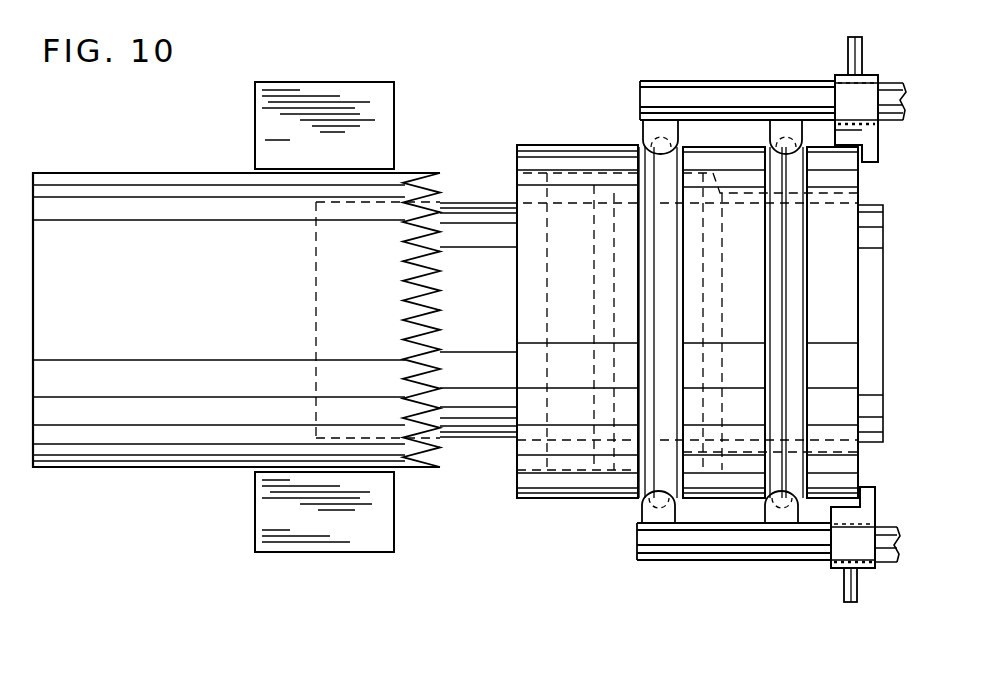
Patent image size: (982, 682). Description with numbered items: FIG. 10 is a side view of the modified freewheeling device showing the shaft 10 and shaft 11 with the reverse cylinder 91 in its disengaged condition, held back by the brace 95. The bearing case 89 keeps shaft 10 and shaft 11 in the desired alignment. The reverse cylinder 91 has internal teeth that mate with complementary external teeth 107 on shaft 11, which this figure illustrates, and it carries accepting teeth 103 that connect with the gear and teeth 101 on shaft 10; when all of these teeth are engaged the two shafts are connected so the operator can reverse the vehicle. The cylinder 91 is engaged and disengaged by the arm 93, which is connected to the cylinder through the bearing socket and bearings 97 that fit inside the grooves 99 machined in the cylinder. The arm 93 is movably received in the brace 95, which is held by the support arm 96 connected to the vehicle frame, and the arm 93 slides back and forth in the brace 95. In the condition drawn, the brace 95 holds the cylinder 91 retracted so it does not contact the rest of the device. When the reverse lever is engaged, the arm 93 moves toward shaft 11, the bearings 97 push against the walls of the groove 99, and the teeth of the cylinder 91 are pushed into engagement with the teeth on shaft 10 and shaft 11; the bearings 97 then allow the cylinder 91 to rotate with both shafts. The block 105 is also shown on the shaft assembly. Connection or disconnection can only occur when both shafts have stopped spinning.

The shaft 10 is at (470, 212).
The shaft 11 is at (150, 460).
The bearing case 89 is at (267, 125).
The reverse cylinder 91 is at (572, 490).
The arm 93 is at (660, 92).
The brace 95 is at (843, 90).
The support arm 96 is at (845, 580).
The bearing socket and bearings 97 is at (655, 135).
The groove 99 is at (798, 290).
The gear and teeth 101 is at (598, 313).
The accepting teeth 103 is at (718, 313).
The block 105 is at (535, 168).
The teeth 107 is at (418, 440).